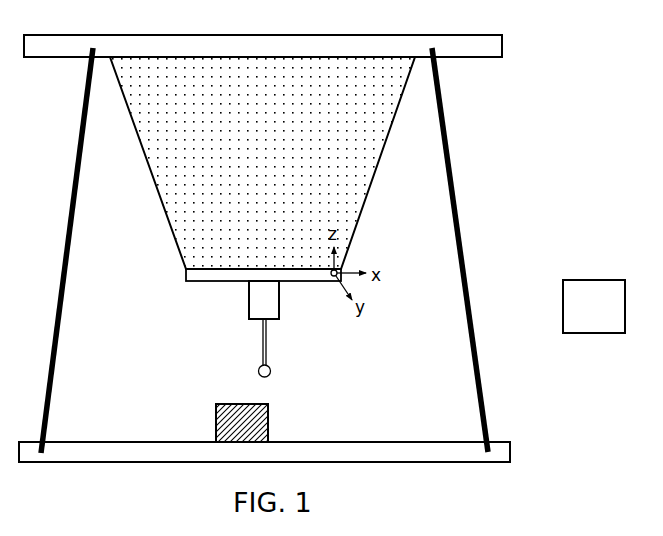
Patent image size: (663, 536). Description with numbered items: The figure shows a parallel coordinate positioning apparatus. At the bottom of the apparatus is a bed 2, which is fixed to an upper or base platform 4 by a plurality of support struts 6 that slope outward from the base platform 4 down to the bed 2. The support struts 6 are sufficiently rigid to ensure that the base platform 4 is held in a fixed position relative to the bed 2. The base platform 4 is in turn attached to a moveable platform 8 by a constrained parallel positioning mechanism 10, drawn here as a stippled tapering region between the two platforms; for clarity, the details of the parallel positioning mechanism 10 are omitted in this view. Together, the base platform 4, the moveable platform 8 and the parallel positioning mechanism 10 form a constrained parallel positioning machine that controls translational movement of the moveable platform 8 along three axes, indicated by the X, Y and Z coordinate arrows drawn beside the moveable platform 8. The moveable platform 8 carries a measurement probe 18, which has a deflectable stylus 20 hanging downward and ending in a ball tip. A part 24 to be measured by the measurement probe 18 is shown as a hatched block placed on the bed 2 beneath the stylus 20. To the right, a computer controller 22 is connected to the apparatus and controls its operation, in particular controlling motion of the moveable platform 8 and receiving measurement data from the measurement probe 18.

The bed 2 is at (117, 441).
The base platform 4 is at (503, 46).
The support struts 6 is at (70, 252).
The moveable platform 8 is at (213, 277).
The parallel positioning mechanism 10 is at (370, 190).
The measurement probe 18 is at (282, 301).
The deflectable stylus 20 is at (261, 340).
The computer controller 22 is at (516, 453).
The part 24 is at (269, 421).